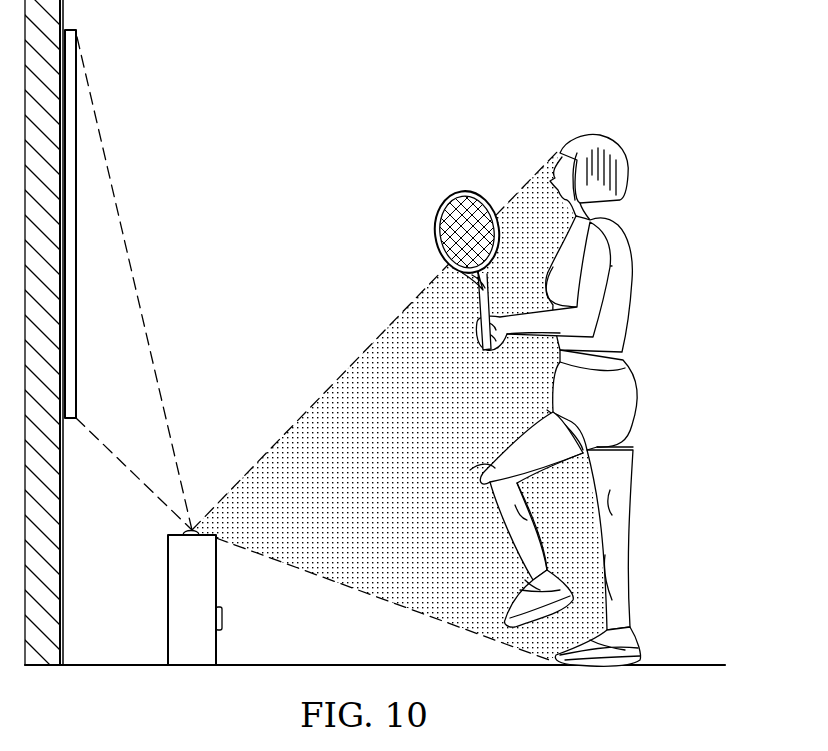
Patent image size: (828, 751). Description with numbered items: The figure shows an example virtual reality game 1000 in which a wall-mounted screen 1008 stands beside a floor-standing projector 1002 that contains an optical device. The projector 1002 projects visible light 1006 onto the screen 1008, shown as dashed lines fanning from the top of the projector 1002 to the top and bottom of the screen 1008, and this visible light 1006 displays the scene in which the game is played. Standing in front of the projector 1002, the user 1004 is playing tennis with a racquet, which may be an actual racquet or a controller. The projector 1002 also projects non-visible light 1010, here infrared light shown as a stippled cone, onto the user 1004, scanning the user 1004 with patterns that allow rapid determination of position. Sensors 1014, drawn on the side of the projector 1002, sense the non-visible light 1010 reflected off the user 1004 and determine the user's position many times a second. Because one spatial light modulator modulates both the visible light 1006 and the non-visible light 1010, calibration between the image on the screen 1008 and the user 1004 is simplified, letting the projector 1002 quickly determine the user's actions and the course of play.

The virtual reality game 1000 is at (527, 69).
The projector 1002 is at (168, 598).
The user 1004 is at (632, 248).
The visible light 1006 is at (134, 290).
The screen 1008 is at (75, 235).
The non-visible light 1010 is at (352, 362).
The sensors 1014 is at (222, 618).